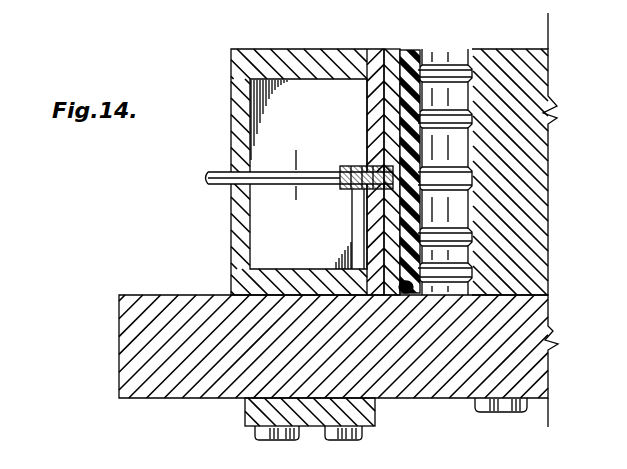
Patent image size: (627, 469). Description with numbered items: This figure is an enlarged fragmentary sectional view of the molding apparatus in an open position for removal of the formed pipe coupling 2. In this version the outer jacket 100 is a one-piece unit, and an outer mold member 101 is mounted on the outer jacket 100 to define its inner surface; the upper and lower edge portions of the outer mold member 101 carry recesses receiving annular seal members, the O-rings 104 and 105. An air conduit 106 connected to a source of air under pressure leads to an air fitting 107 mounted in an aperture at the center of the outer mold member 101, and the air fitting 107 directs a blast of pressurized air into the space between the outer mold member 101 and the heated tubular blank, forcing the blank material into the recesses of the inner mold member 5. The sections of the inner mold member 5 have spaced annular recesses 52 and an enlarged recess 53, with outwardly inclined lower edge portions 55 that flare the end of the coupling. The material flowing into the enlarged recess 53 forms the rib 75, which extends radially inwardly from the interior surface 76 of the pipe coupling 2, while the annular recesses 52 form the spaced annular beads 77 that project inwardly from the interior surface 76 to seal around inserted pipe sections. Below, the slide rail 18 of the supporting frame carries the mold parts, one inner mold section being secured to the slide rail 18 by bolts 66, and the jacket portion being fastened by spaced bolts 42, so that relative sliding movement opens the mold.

The pipe coupling 2 is at (404, 46).
The inner mold member 5 is at (490, 46).
The slide rail 18 is at (119, 368).
The screws or bolts 42 is at (147, 0).
The annular recesses 52 is at (472, 84).
The enlarged recess 53 is at (475, 183).
The lower edge portions 55 is at (466, 292).
The screws or bolts 66 is at (484, 405).
The rib 75 is at (464, 175).
The interior surface 76 is at (457, 145).
The annular beads 77 is at (440, 79).
The outer jacket 100 is at (296, 49).
The outer mold member 101 is at (398, 56).
The O-ring 104 is at (399, 60).
The O-ring 105 is at (402, 284).
The air conduit 106 is at (228, 186).
The air fitting 107 is at (355, 191).